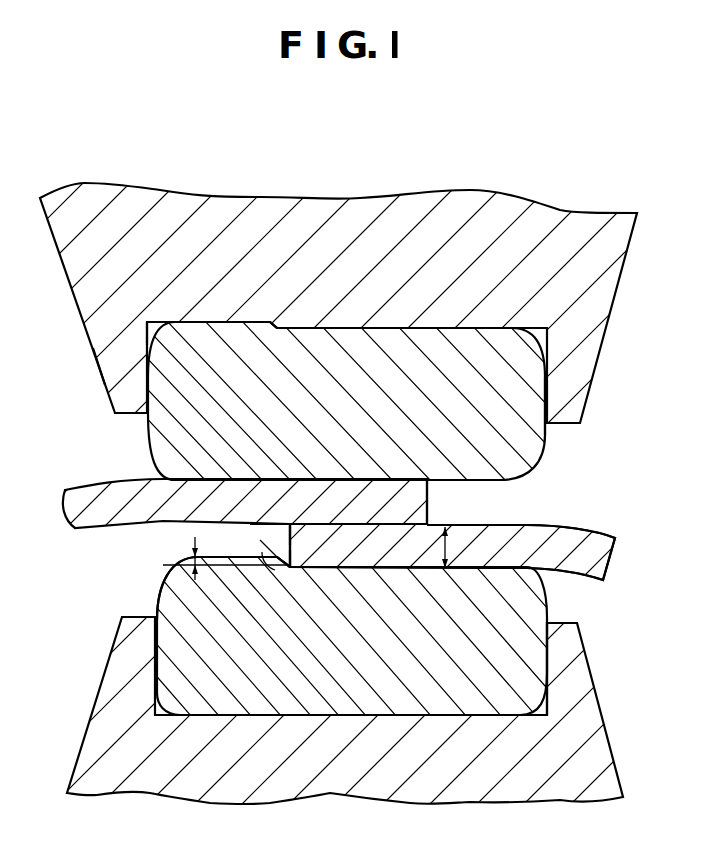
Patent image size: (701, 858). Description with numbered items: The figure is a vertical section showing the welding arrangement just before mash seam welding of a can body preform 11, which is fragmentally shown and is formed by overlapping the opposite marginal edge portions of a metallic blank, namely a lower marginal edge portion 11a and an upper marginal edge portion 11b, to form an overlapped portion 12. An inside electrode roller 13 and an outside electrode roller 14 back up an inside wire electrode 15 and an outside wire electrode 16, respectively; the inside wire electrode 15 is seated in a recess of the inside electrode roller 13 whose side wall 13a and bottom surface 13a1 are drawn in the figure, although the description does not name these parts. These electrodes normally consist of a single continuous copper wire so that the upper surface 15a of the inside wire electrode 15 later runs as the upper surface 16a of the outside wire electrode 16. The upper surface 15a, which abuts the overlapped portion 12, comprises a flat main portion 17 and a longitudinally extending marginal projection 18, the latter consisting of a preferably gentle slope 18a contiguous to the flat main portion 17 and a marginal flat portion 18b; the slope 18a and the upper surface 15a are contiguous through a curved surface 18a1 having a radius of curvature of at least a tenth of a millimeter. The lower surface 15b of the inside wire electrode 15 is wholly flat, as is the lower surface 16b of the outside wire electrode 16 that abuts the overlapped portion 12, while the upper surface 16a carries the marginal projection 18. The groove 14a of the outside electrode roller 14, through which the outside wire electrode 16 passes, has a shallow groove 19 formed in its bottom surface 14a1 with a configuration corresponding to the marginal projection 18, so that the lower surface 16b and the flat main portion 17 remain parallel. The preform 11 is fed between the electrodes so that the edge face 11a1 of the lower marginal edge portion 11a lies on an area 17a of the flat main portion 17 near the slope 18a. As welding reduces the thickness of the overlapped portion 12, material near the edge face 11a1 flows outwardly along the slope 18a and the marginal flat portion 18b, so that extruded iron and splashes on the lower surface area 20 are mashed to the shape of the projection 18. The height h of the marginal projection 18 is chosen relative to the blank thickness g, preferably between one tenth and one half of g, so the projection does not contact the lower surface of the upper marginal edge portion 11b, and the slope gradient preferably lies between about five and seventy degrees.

The can body preform 11 is at (78, 479).
The lower marginal edge portion 11a is at (386, 568).
The edge face of the lower marginal edge portion 11a1 is at (282, 524).
The upper marginal edge portion 11b is at (345, 495).
The overlapped portion 12 is at (315, 491).
The inside electrode roller 13 is at (100, 738).
The lower die recess side wall 13a is at (535, 717).
The lower die recess bottom 13a1 is at (370, 717).
The outside electrode roller 14 is at (103, 331).
The groove of the outside electrode roller 14a is at (104, 366).
The bottom surface of the groove 14a1 is at (157, 326).
The inside wire electrode 15 is at (178, 642).
The upper surface of the inside wire electrode 15a is at (432, 568).
The lower surface of the inside wire electrode 15b is at (292, 713).
The outside wire electrode 16 is at (165, 445).
The upper surface of the outside wire electrode 16a is at (325, 327).
The lower surface of the outside wire electrode 16b is at (438, 476).
The flat main portion 17 is at (465, 570).
The area of the main flat portion near the slope 17a is at (292, 570).
The marginal projection 18 is at (222, 325).
The slope 18a is at (251, 574).
The curved surface 18a1 is at (292, 560).
The marginal flat portion 18b is at (206, 566).
The shallow groove 19 is at (221, 325).
The lower surface area 20 is at (270, 520).
The height of the marginal projection h is at (190, 556).
The blank thickness g is at (447, 553).